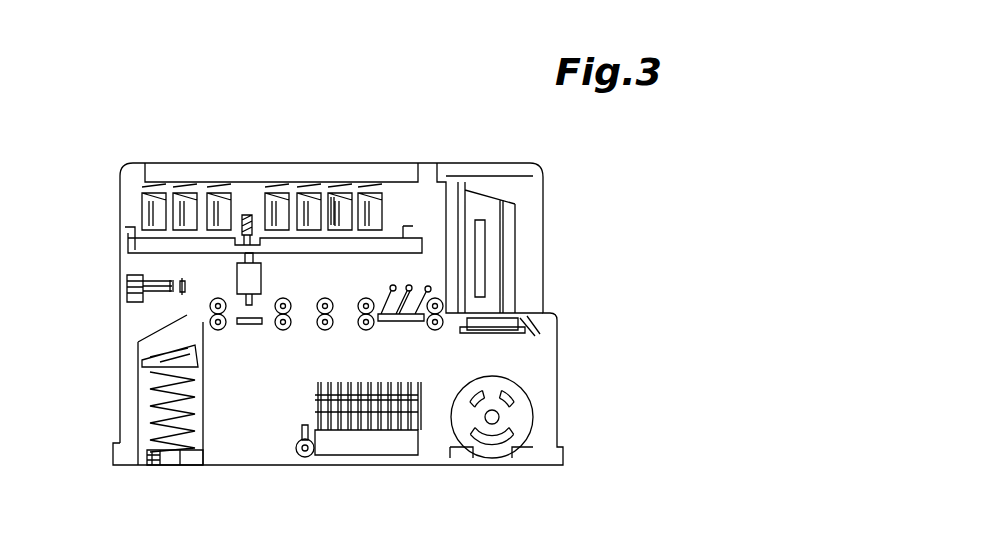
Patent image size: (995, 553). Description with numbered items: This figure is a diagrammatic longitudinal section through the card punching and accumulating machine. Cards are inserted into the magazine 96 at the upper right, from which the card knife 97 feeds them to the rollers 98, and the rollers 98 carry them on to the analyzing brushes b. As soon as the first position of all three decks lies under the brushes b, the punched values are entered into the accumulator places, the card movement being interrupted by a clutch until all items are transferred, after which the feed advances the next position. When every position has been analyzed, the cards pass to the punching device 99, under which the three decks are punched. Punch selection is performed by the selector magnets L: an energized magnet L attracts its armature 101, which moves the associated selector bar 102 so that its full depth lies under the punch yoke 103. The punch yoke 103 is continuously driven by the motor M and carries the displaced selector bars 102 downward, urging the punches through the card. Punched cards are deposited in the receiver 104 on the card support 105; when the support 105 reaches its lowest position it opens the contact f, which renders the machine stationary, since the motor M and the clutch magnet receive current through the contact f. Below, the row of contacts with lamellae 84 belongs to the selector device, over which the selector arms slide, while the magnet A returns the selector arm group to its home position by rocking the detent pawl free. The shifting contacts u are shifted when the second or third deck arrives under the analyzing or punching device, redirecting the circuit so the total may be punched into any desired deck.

The punch yoke 103 is at (247, 216).
The armature 101 is at (309, 188).
The selector magnets L is at (344, 207).
The selector bar 102 is at (393, 245).
The magazine 96 is at (505, 250).
The card knife 97 is at (533, 322).
The punching device 99 is at (245, 275).
The shifting contacts u is at (168, 292).
The analyzing brushes b is at (427, 286).
The rollers 98 is at (366, 326).
The card support 105 is at (170, 353).
The receiver 104 is at (147, 403).
The lamellae 84 is at (315, 401).
The contact f is at (150, 468).
The magnet A is at (305, 458).
The motor M is at (518, 430).